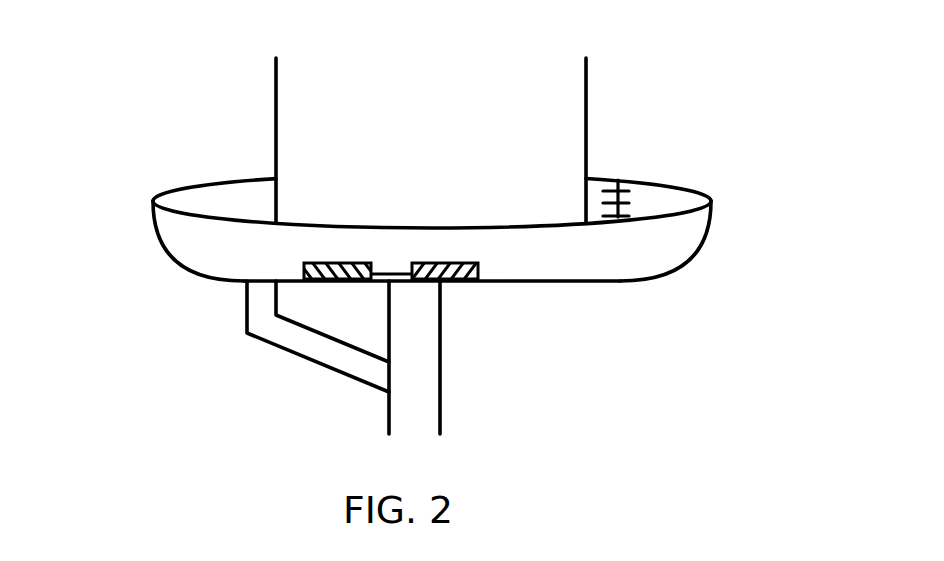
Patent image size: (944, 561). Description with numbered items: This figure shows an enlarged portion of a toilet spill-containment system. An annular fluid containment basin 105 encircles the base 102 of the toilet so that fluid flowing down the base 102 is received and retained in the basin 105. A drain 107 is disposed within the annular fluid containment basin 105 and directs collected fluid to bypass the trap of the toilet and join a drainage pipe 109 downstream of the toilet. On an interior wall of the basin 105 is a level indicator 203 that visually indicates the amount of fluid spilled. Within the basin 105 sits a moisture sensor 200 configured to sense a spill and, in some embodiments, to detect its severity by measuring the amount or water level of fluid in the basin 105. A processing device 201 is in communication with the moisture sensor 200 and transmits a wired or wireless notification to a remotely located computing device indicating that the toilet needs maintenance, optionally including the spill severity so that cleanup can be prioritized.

The base of the toilet 102 is at (258, 106).
The annular fluid containment basin 105 is at (722, 213).
The drain 107 is at (234, 305).
The drainage pipe 109 is at (452, 368).
The moisture sensor 200 is at (340, 246).
The processing device 201 is at (445, 246).
The level indicator 203 is at (619, 172).